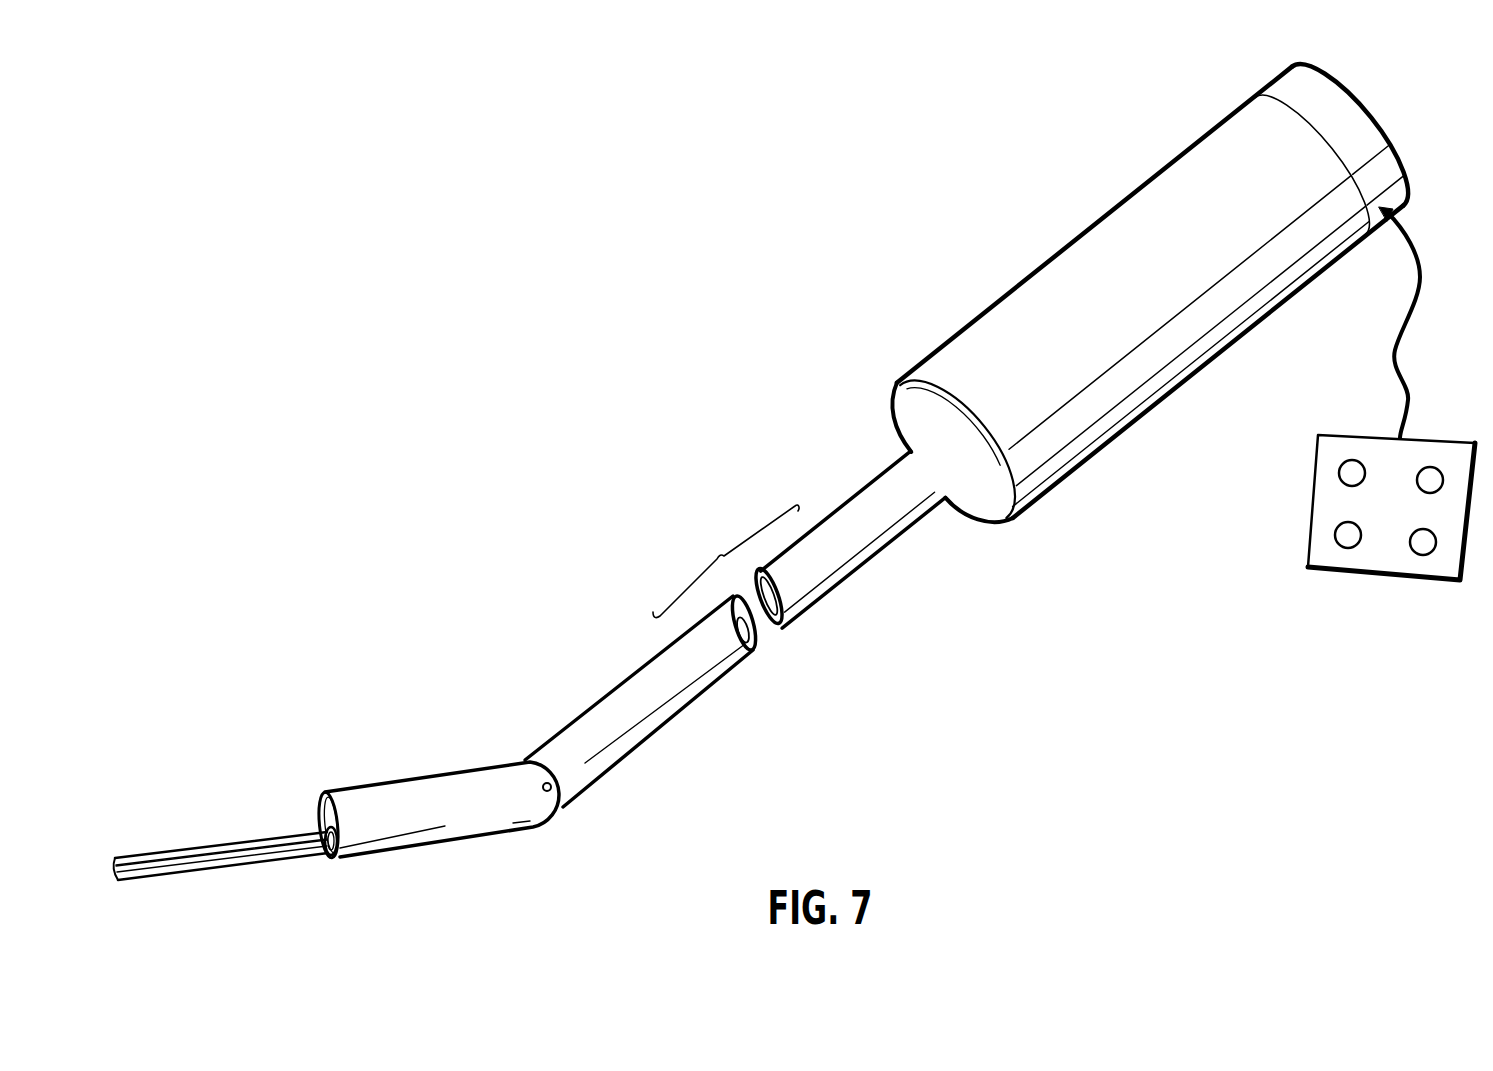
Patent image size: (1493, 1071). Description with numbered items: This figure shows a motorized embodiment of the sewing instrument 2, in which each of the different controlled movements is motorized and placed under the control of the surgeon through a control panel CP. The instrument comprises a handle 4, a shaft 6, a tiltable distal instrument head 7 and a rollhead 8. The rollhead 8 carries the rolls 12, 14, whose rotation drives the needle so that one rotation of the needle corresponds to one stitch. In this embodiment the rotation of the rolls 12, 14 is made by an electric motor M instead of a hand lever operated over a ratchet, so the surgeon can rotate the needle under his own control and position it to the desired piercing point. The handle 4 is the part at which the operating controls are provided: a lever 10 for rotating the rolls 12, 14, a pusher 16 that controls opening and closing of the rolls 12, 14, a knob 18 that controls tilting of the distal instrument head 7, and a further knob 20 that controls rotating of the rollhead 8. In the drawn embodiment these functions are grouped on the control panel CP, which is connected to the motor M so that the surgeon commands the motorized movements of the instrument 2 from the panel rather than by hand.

The sewing instrument 2 is at (662, 445).
The handle 4 is at (1212, 330).
The shaft 6 is at (858, 548).
The tiltable distal instrument head 7 is at (442, 798).
The rollhead 8 is at (345, 838).
The lever 10 is at (1338, 542).
The roll 12 is at (252, 840).
The roll 14 is at (262, 863).
The pusher 16 is at (1420, 553).
The knob 18 is at (1440, 470).
The further knob 20 is at (1363, 462).
The electric motor M is at (1378, 135).
The control panel CP is at (1322, 505).